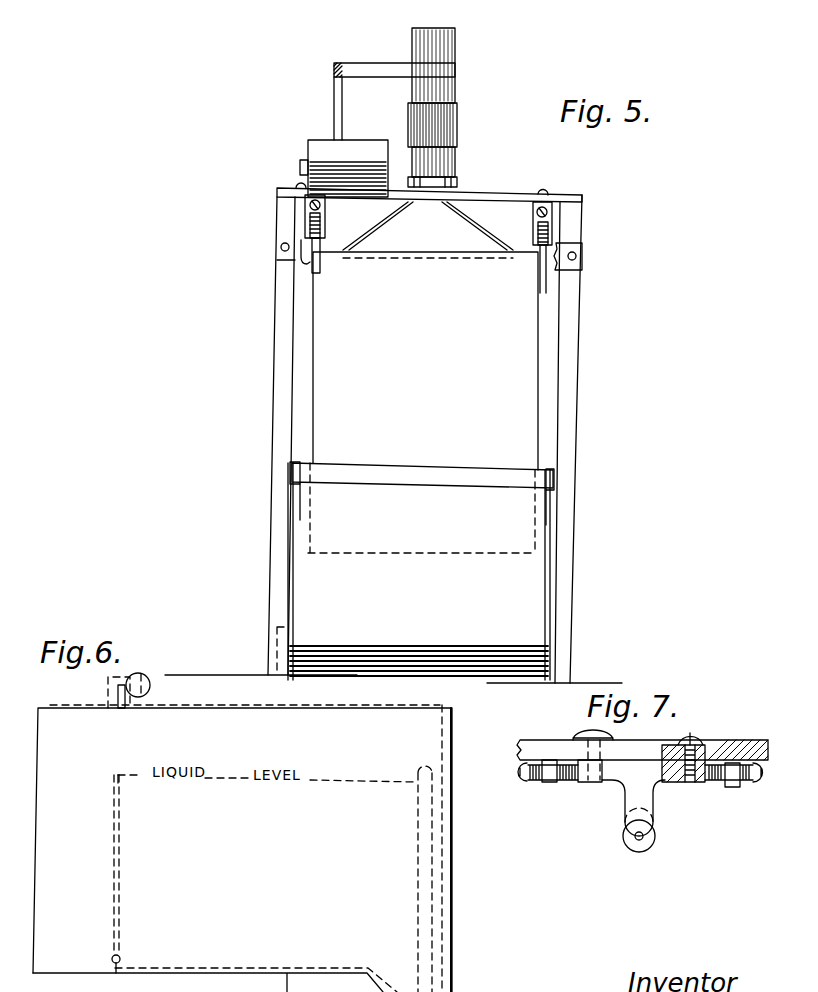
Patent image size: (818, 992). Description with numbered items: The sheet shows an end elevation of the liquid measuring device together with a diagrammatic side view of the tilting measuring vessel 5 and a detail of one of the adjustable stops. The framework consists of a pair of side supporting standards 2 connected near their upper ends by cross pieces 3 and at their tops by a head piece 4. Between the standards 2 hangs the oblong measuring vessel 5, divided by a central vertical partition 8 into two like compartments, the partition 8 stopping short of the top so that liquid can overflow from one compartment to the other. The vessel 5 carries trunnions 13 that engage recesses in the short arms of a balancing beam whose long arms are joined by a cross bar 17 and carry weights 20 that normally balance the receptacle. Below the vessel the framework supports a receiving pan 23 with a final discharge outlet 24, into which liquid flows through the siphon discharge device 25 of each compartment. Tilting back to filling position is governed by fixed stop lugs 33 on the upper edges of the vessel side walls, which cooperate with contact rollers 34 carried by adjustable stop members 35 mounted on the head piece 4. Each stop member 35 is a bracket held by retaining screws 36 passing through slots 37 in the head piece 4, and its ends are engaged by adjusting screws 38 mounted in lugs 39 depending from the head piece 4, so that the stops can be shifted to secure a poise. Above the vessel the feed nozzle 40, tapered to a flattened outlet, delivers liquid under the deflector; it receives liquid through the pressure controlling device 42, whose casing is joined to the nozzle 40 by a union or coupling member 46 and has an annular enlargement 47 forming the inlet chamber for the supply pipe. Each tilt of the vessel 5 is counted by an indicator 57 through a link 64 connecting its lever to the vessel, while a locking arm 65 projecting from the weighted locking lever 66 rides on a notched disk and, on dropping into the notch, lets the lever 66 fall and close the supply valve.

In FIG. 5, the side supporting standards 2 is at (273, 312).
In FIG. 5, the cross pieces 3 is at (277, 240).
In FIG. 7, the head piece 4 is at (742, 742).
In FIG. 5, the measuring vessel 5 is at (513, 397).
In FIG. 6, the central vertical partition 8 is at (114, 892).
In FIG. 6, the trunnions 13 is at (119, 956).
In FIG. 5, the cross bar 17 is at (405, 473).
In FIG. 5, the weights 20 is at (537, 602).
In FIG. 5, the receiving pan 23 is at (550, 662).
In FIG. 5, the final discharge outlet 24 is at (277, 630).
In FIG. 6, the siphon discharge device 25 is at (415, 898).
In FIG. 5, the fixed stop lugs 33 is at (537, 252).
In FIG. 6, the fixed stop lugs 33 is at (117, 695).
In FIG. 5, the contact rollers 34 is at (318, 240).
In FIG. 6, the contact rollers 34 is at (149, 678).
In FIG. 7, the contact rollers 34 is at (625, 838).
In FIG. 5, the adjustable stop members 35 is at (325, 219).
In FIG. 7, the adjustable stop members 35 is at (625, 800).
In FIG. 7, the retaining screws 36 is at (583, 783).
In FIG. 7, the slots 37 is at (702, 740).
In FIG. 7, the adjusting screws 38 is at (521, 782).
In FIG. 7, the lugs 39 is at (549, 783).
In FIG. 5, the feed nozzle 40 is at (465, 223).
In FIG. 5, the pressure controlling device 42 is at (453, 83).
In FIG. 5, the union or coupling member 46 is at (455, 180).
In FIG. 5, the annular enlargement 47 is at (456, 127).
In FIG. 5, the indicator 57 is at (362, 147).
In FIG. 5, the link 64 is at (302, 219).
In FIG. 5, the locking arm 65 is at (334, 108).
In FIG. 5, the locking lever 66 is at (365, 70).